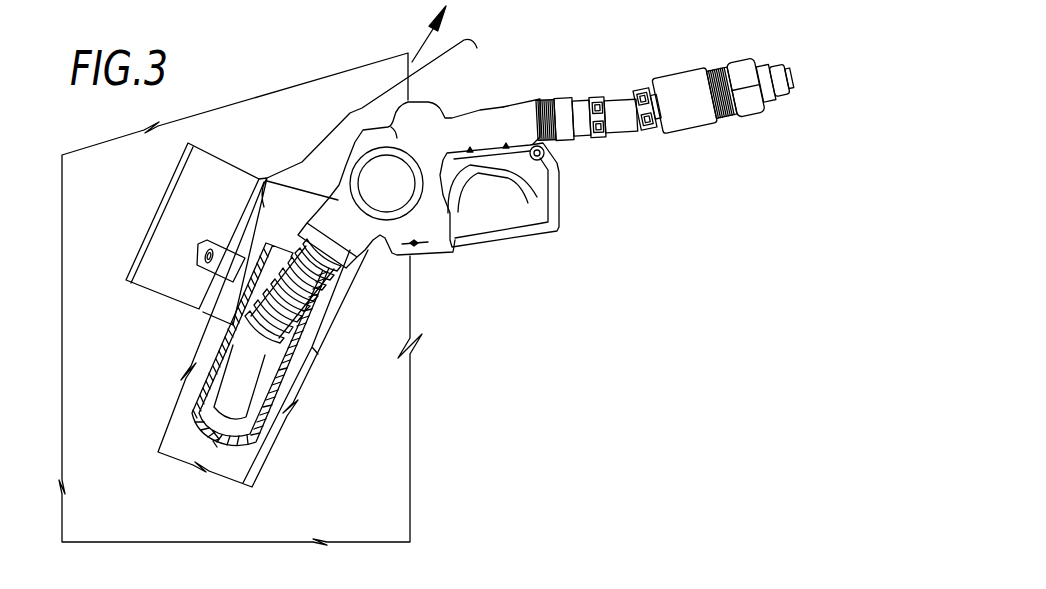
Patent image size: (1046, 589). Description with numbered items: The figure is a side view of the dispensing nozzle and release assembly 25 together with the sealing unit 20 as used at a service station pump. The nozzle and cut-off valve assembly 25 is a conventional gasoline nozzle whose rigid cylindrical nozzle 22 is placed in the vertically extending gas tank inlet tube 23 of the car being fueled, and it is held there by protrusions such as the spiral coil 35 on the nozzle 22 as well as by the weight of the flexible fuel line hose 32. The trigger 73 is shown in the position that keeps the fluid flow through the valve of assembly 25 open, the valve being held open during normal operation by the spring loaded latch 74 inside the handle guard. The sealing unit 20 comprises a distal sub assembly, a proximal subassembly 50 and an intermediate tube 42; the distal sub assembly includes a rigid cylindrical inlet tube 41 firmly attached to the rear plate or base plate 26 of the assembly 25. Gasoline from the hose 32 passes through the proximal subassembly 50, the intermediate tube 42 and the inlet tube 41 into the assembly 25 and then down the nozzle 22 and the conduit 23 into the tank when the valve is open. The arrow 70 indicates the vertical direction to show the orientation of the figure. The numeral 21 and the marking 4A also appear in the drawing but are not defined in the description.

The sealing unit 20 is at (659, 84).
The nozzle body 21 is at (480, 123).
The rigid cylindrical nozzle 22 is at (242, 378).
The gas tank inlet tube 23 is at (252, 442).
The nozzle and cut-off valve assembly 25 is at (400, 178).
The base plate 26 is at (564, 98).
The fuel line hose 32 is at (790, 66).
The spiral coil 35 is at (290, 286).
The rigid cylindrical inlet tube 41 is at (570, 103).
The intermediate tube 42 is at (630, 94).
The proximal subassembly 50 is at (709, 128).
The arrow 70 is at (420, 50).
The trigger 73 is at (508, 180).
The spring loaded latch 74 is at (562, 218).
The section 4A is at (806, 123).